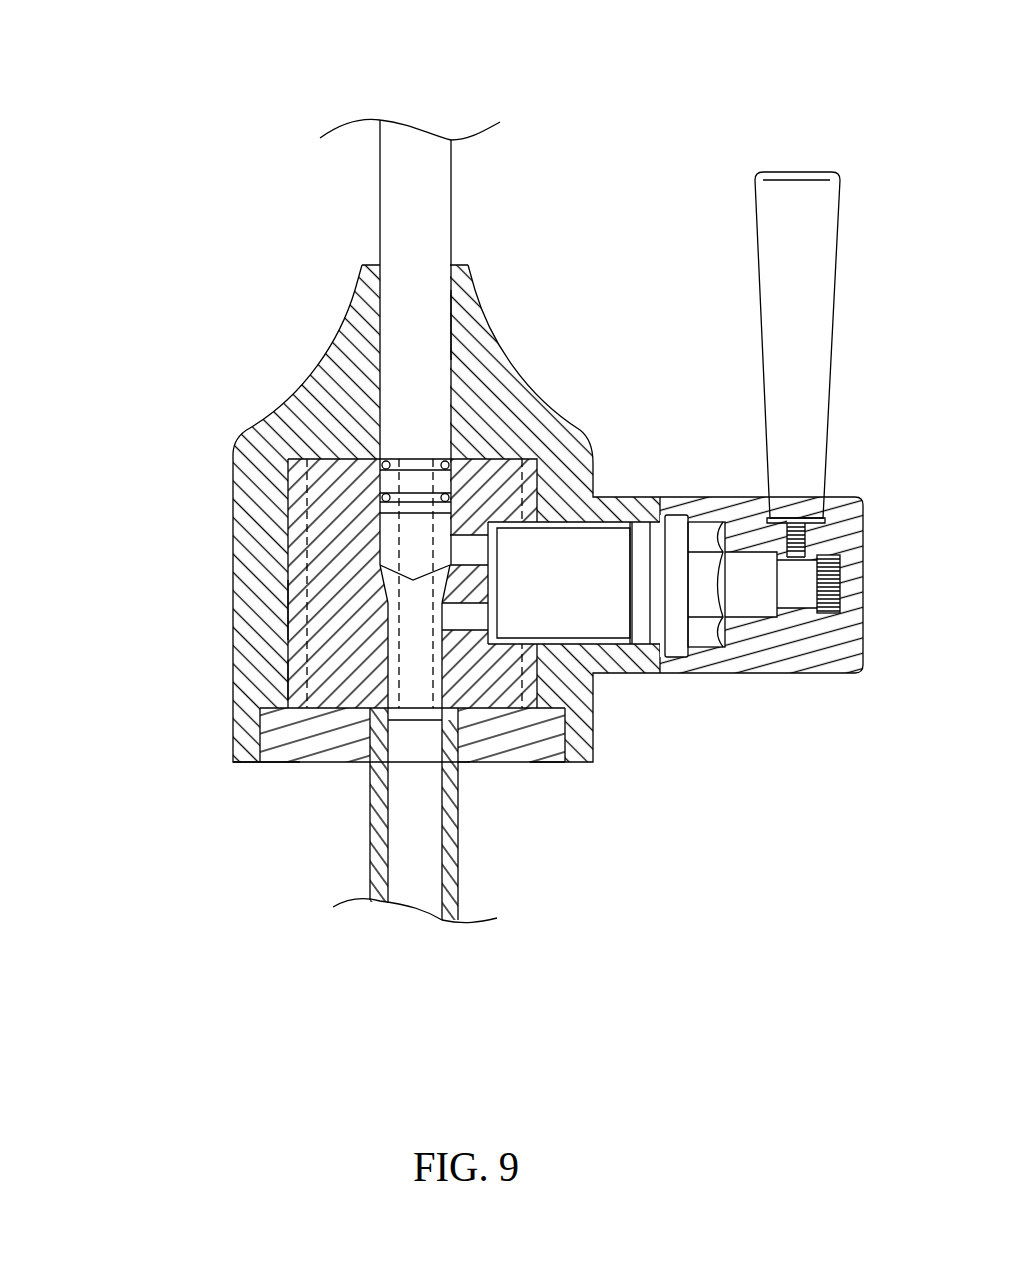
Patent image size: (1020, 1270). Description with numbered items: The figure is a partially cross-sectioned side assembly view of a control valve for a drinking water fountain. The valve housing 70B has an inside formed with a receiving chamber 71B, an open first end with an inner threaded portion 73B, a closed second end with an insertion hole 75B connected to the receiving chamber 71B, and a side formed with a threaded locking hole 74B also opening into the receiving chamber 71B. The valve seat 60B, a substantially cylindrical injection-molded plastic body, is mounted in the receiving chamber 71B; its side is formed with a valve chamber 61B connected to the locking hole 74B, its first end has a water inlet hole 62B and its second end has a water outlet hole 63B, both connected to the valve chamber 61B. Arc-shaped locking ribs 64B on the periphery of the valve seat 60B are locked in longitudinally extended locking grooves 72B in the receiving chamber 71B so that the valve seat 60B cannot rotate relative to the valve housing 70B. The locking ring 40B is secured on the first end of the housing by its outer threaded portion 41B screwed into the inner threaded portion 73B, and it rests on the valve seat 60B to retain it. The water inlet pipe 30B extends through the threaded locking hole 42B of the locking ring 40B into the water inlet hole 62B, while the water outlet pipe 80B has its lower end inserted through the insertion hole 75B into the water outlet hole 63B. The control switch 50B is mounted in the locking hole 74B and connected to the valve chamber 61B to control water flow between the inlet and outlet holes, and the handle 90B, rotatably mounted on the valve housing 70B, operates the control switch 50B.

The water inlet pipe 30B is at (370, 827).
The locking ring 40B is at (288, 762).
The outer threaded portion 41B is at (537, 762).
The threaded locking hole 42B is at (460, 762).
The control switch 50B is at (677, 627).
The valve seat 60B is at (285, 510).
The valve chamber 61B is at (513, 526).
The water inlet hole 62B is at (387, 637).
The water outlet hole 63B is at (368, 466).
The locking ribs 64B is at (293, 680).
The valve housing 70B is at (263, 408).
The receiving chamber 71B is at (293, 568).
The locking grooves 72B is at (293, 612).
The inner threaded portion 73B is at (260, 733).
The threaded locking hole 74B is at (606, 526).
The insertion hole 75B is at (453, 332).
The water outlet pipe 80B is at (453, 187).
The handle 90B is at (823, 673).